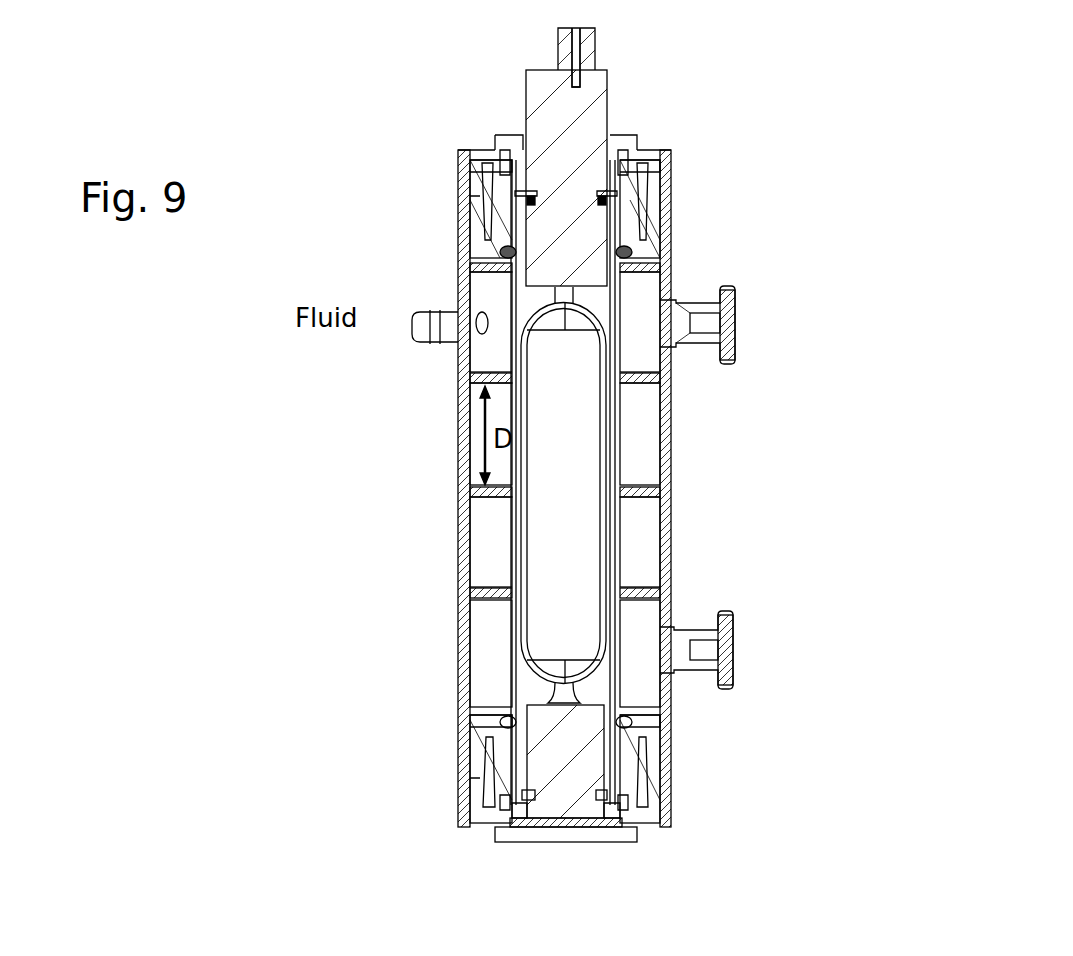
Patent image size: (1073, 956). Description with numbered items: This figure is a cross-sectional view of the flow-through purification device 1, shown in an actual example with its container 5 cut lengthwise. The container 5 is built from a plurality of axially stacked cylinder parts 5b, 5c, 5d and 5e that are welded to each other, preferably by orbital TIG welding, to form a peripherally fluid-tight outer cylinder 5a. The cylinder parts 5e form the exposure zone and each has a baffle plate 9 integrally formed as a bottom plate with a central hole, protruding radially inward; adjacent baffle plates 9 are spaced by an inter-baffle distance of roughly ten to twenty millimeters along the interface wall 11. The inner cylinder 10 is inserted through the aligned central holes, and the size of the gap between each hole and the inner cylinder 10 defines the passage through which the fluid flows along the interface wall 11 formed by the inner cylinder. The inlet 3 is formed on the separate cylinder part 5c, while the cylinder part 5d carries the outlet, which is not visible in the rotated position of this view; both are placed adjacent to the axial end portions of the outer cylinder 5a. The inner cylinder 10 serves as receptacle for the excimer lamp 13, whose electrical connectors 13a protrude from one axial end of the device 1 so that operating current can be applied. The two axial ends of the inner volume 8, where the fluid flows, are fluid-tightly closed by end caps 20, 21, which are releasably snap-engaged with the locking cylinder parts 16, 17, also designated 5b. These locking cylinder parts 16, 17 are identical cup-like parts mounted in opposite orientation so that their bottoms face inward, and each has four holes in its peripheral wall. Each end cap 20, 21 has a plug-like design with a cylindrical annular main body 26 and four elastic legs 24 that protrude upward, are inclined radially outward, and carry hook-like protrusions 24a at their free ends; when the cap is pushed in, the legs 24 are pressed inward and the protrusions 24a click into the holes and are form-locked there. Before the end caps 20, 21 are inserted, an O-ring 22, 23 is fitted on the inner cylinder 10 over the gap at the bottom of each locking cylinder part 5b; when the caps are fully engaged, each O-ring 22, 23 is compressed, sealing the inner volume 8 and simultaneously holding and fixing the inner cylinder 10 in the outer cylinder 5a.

The device 1 is at (432, 128).
The inlet 3 is at (445, 318).
The container 5 is at (665, 513).
The outer cylinder 5a is at (665, 457).
The locking cylinder part 5b is at (565, 479).
The cylinder part provided with the inlet 5c is at (665, 308).
The cylinder part provided with the outlet 5d is at (667, 618).
The cylinder part forming the exposure zone 5e is at (460, 545).
The inner volume 8 is at (488, 568).
The baffle plate 9 is at (650, 380).
The inner cylinder 10 is at (598, 190).
The interface wall 11 is at (505, 637).
The excimer lamp 13 is at (568, 140).
The electrical connectors 13a is at (590, 48).
The locking cylinder part 16 is at (665, 230).
The locking cylinder part 17 is at (460, 725).
The end cap 20 is at (502, 173).
The end cap 21 is at (628, 755).
The O-ring 22 is at (640, 256).
The O-ring 23 is at (620, 723).
The elastic leg 24 is at (472, 752).
The hook-like protrusion 24a is at (462, 778).
The cylindrical annular main body 26 is at (628, 795).